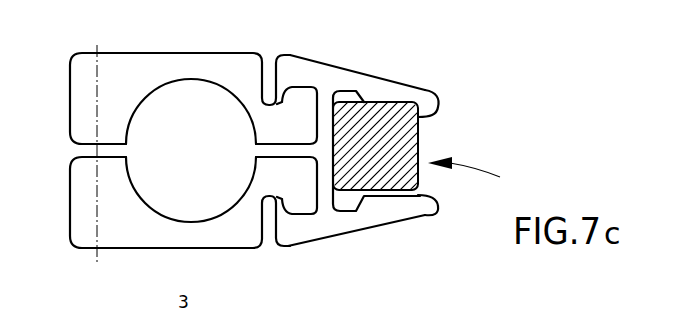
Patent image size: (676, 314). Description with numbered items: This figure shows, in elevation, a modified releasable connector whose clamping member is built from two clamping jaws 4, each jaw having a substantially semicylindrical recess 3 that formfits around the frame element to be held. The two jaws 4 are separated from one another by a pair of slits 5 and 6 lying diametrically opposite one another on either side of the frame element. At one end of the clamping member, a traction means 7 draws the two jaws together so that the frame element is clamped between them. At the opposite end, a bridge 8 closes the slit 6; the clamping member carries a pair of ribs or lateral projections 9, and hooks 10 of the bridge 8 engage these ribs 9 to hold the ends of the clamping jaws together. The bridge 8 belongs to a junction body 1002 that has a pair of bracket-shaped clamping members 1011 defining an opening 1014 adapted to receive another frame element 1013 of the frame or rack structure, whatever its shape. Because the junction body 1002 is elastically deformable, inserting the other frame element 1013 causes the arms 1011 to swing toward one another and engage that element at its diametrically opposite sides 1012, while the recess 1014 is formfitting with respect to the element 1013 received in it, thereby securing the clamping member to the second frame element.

The semicylindrical recess 3 is at (175, 63).
The clamping jaw 4 is at (112, 105).
The slit 5 is at (83, 152).
The slit 6 is at (258, 228).
The traction means 7 is at (97, 68).
The bridge 8 is at (330, 122).
The rib 9 is at (308, 100).
The hook 10 is at (287, 70).
The junction body 1002 is at (448, 81).
The clamping member 1011 is at (362, 78).
The diametrically opposite side 1012 is at (400, 87).
The frame element 1013 is at (412, 131).
The opening 1014 is at (488, 171).